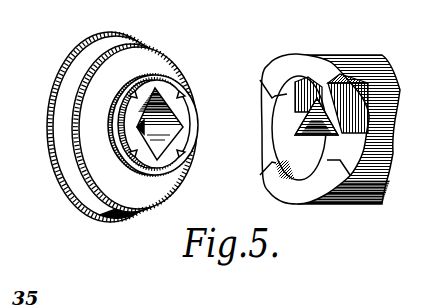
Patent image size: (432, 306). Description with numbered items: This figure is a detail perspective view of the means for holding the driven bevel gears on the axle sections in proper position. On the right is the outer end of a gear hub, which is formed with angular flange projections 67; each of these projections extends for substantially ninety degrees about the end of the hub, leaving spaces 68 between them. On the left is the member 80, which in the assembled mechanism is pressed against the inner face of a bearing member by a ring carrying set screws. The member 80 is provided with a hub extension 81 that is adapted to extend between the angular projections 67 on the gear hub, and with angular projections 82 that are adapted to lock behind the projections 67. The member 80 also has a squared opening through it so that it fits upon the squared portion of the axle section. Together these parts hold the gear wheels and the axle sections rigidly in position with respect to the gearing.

The member 80 is at (107, 127).
The hub extension 81 is at (157, 84).
The angular projections 82 is at (108, 137).
The angular flange projections 67 is at (314, 132).
The spaces 68 is at (348, 129).